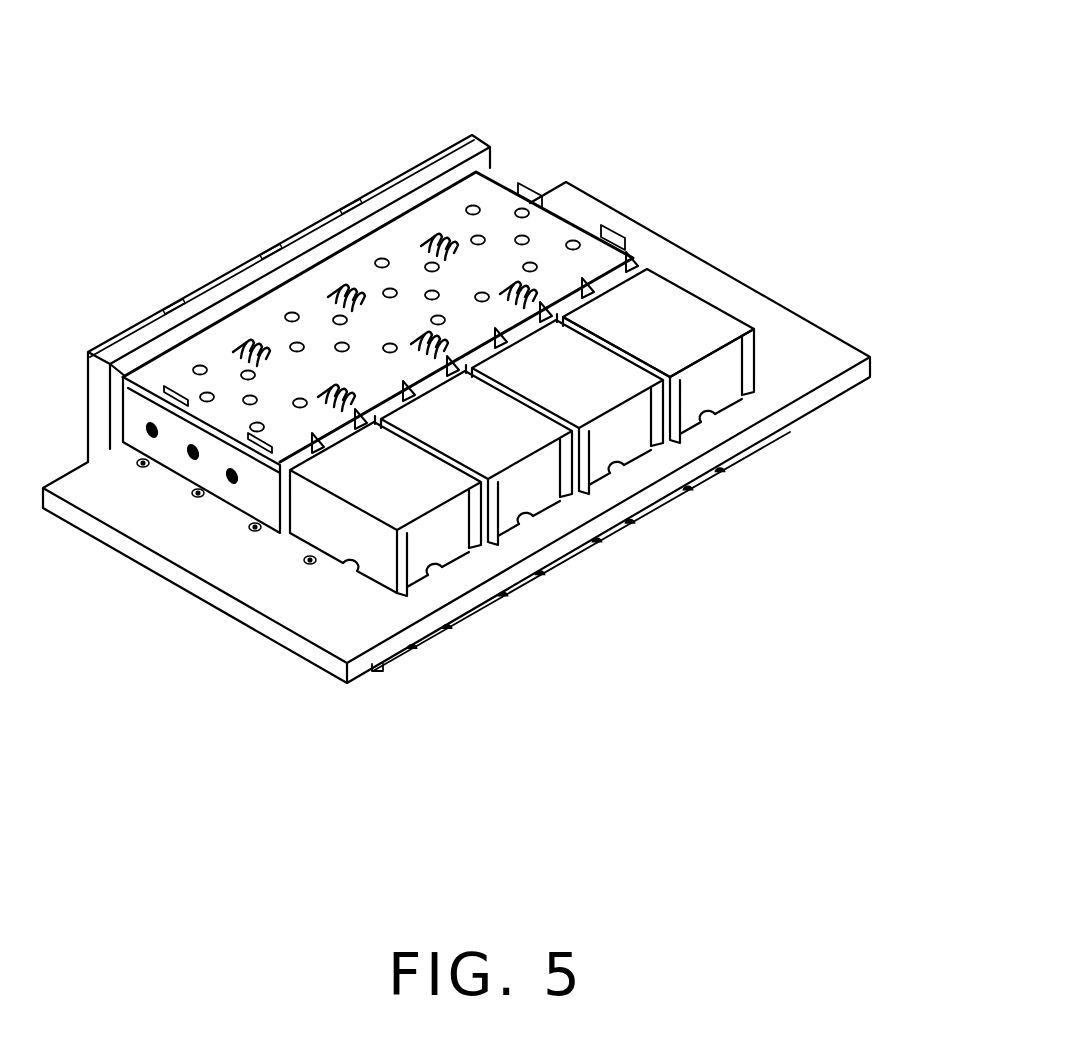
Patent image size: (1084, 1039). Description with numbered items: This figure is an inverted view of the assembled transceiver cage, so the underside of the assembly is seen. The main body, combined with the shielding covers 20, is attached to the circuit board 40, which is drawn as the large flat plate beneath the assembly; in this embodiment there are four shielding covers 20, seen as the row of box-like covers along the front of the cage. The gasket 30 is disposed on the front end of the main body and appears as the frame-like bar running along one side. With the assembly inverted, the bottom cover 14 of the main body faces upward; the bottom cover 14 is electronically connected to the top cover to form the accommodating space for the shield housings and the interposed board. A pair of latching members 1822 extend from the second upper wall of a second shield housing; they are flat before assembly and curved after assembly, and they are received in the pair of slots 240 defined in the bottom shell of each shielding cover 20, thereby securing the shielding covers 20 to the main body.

The bottom cover 14 is at (553, 232).
The latching members 1822 is at (626, 256).
The shielding cover 20 is at (705, 330).
The slots 240 is at (630, 266).
The gasket 30 is at (460, 150).
The circuit board 40 is at (807, 366).